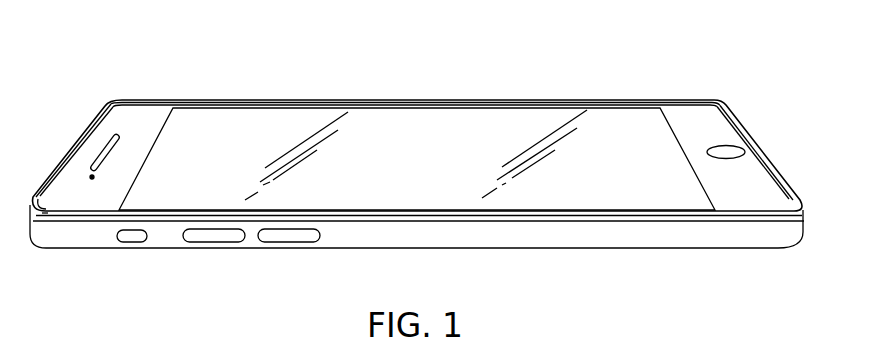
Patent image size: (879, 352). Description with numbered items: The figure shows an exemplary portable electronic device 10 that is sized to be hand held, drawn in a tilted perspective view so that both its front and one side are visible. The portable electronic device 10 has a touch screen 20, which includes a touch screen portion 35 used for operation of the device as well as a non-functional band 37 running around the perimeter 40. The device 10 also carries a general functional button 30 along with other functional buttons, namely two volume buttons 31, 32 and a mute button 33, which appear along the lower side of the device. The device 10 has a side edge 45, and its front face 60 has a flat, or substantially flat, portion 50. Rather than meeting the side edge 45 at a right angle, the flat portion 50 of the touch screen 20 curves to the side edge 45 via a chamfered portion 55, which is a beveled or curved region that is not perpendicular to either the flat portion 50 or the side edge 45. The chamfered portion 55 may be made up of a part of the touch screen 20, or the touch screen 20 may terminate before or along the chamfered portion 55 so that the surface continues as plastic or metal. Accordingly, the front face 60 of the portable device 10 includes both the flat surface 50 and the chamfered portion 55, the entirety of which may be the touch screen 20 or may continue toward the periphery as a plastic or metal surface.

The portable electronic device 10 is at (99, 42).
The touch screen 20 is at (223, 118).
The general functional button 30 is at (730, 144).
The volume button 31 is at (210, 242).
The volume button 32 is at (278, 242).
The mute button 33 is at (132, 242).
The touch screen portion 35 is at (415, 122).
The non-functional band 37 is at (49, 206).
The perimeter 40 is at (73, 150).
The side edge 45 is at (687, 236).
The flat portion 50 is at (606, 130).
The chamfered portion 55 is at (792, 192).
The front face 60 is at (728, 77).